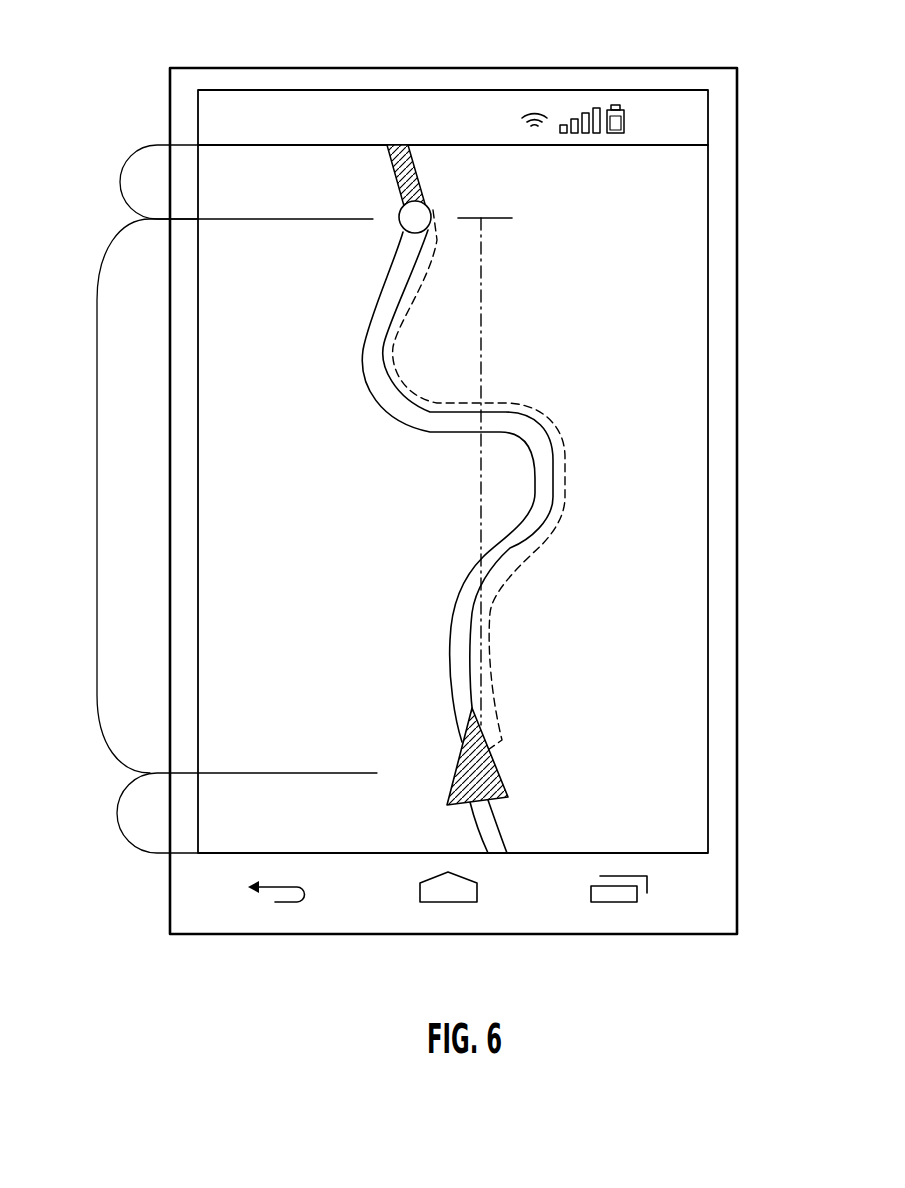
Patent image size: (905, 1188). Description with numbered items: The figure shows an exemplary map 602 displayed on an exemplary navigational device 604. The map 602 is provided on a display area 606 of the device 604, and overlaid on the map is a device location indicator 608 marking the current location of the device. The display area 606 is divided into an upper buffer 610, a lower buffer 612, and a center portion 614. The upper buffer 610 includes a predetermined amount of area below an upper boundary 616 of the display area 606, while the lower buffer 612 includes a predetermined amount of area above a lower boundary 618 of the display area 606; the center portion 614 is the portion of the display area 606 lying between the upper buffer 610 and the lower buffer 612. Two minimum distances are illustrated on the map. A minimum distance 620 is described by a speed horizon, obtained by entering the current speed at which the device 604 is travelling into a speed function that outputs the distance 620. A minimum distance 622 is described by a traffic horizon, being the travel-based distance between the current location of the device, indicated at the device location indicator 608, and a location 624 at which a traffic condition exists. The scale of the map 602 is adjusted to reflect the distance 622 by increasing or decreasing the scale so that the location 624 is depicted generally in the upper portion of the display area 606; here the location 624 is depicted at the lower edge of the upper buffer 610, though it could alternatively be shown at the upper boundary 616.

The map 602 is at (650, 218).
The navigational device 604 is at (170, 68).
The display area 606 is at (708, 148).
The device location indicator 608 is at (503, 777).
The upper buffer 610 is at (120, 182).
The lower buffer 612 is at (118, 813).
The center portion 614 is at (96, 493).
The upper boundary 616 is at (328, 145).
The lower boundary 618 is at (324, 853).
The minimum distance 620 is at (481, 370).
The minimum distance 622 is at (565, 475).
The location 624 is at (417, 211).